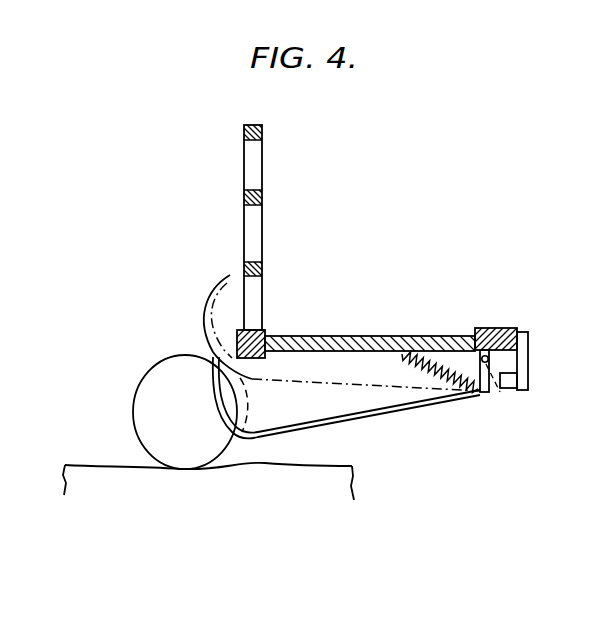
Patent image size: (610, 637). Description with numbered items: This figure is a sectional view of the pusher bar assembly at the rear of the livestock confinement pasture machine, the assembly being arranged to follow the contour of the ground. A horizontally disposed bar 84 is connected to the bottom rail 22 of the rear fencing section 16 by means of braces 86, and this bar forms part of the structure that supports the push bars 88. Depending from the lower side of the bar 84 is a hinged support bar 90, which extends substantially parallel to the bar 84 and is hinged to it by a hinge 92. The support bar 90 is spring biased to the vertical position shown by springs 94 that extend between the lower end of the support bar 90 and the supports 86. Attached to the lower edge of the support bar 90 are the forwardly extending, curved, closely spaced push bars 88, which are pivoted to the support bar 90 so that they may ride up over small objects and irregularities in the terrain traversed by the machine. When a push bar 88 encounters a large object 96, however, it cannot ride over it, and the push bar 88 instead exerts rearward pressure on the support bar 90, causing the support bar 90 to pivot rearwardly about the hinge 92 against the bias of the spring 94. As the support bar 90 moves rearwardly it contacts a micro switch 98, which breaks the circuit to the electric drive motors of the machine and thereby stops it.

The rear fencing section 16 is at (263, 131).
The bottom rail 22 is at (265, 330).
The braces 86 is at (357, 336).
The bar 84 is at (495, 327).
The hinge 92 is at (490, 356).
The support bar 90 is at (492, 394).
The micro switch 98 is at (514, 391).
The spring 94 is at (423, 362).
The push bar 88 is at (383, 419).
The large object 96 is at (158, 465).